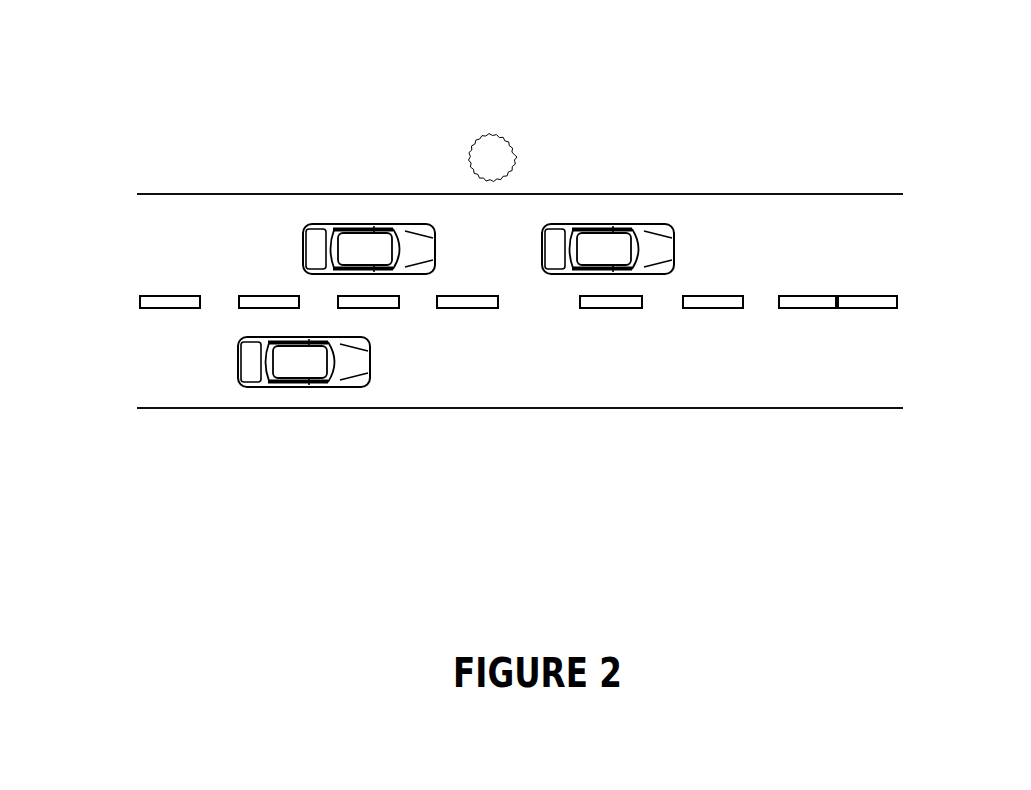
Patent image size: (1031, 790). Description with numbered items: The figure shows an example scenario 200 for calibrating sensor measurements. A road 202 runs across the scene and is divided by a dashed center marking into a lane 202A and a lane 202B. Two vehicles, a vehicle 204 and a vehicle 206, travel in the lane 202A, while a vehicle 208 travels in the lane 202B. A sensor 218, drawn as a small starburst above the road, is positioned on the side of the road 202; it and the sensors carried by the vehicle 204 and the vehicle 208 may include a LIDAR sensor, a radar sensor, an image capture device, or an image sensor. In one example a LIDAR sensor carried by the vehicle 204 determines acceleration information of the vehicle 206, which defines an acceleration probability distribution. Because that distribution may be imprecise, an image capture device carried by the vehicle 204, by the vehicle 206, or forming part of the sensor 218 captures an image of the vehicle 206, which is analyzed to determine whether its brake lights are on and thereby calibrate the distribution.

The scenario 200 is at (878, 118).
The road 202 is at (443, 193).
The lane 202A is at (128, 232).
The lane 202B is at (128, 396).
The vehicle 204 is at (362, 227).
The vehicle 206 is at (613, 227).
The vehicle 208 is at (302, 380).
The sensor 218 is at (498, 137).